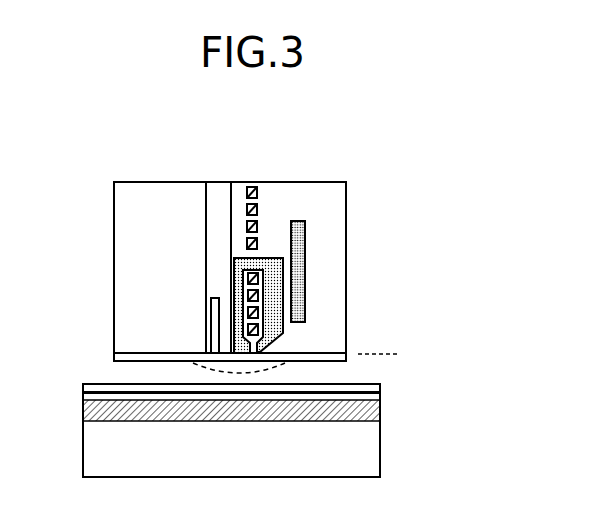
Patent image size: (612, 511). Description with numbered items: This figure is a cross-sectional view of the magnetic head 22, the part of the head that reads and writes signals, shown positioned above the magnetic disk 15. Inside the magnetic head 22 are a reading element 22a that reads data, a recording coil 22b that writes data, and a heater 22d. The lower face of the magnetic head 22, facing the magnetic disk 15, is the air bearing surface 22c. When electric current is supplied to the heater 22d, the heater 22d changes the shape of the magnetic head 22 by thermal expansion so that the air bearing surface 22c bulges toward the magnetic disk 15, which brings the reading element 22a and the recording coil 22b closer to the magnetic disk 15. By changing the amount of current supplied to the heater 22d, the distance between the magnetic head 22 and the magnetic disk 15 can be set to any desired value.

The magnetic head 22 is at (351, 118).
The reading element 22a is at (157, 188).
The recording coil 22b is at (275, 260).
The air bearing surface 22c is at (348, 354).
The heater 22d is at (306, 258).
The magnetic disk 15 is at (382, 445).